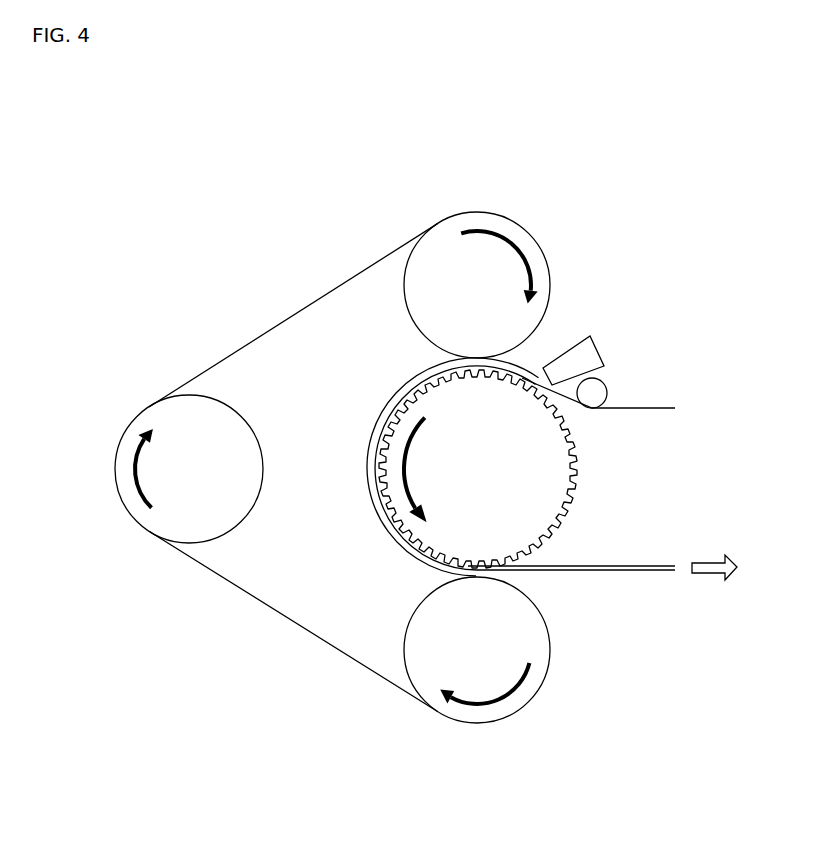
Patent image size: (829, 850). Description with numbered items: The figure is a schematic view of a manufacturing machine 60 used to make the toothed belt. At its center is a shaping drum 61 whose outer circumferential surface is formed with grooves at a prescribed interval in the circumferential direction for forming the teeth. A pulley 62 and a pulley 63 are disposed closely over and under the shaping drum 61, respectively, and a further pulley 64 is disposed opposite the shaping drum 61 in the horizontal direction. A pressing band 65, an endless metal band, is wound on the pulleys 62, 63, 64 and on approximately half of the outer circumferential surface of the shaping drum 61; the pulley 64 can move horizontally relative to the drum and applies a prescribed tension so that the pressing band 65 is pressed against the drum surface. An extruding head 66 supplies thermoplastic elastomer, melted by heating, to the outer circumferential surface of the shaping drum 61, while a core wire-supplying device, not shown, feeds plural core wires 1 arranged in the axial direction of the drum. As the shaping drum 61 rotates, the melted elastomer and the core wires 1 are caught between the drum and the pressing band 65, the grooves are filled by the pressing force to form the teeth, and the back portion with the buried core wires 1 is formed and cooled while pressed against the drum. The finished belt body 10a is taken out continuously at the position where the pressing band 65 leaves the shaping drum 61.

The manufacturing machine 60 is at (238, 190).
The shaping drum 61 is at (540, 503).
The pulley 62 is at (477, 225).
The pulley 63 is at (477, 715).
The pulley 64 is at (172, 407).
The pressing band 65 is at (293, 318).
The extruding head 66 is at (593, 355).
The core wires 1 is at (646, 412).
The belt body 10a is at (630, 568).